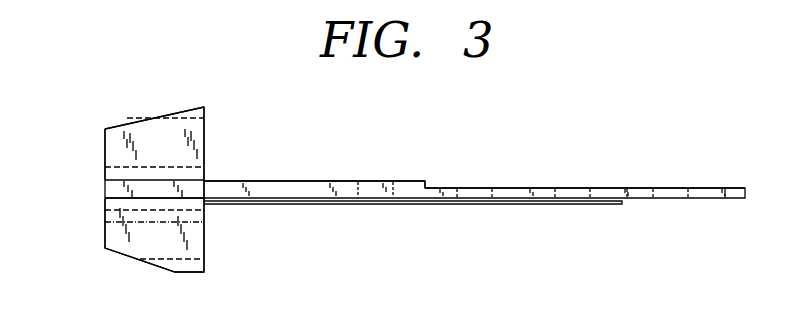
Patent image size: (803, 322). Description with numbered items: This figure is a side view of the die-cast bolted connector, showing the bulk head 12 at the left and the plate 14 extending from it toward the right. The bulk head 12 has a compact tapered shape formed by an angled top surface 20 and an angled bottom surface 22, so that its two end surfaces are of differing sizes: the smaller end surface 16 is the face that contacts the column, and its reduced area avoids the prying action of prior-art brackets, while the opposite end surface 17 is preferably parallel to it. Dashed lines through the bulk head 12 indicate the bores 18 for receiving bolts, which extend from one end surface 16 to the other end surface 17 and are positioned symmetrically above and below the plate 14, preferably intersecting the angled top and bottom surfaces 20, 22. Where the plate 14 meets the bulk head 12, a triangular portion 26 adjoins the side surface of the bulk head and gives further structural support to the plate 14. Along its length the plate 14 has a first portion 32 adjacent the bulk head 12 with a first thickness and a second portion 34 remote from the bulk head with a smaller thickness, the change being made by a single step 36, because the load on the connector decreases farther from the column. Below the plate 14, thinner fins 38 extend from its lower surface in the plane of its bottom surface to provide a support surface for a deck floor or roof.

The bulk head 12 is at (147, 91).
The plate 14 is at (675, 168).
The end surface 16 is at (105, 160).
The end surface 17 is at (204, 145).
The bores 18 is at (178, 117).
The angled top surface 20 is at (130, 118).
The angled bottom surface 22 is at (132, 258).
The triangular portions 26 is at (193, 188).
The first portion 32 is at (313, 181).
The second portion 34 is at (563, 188).
The step 36 is at (430, 188).
The fins 38 is at (567, 205).